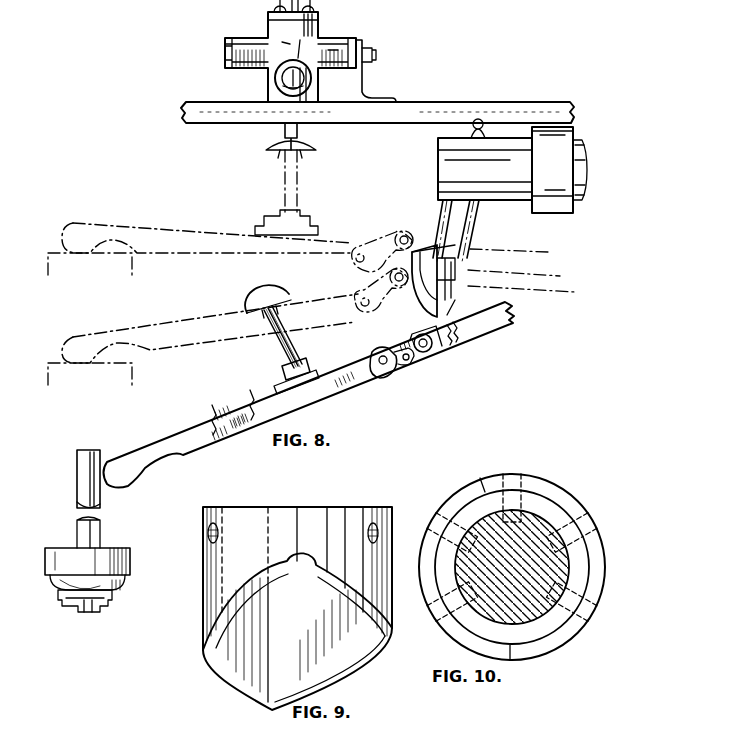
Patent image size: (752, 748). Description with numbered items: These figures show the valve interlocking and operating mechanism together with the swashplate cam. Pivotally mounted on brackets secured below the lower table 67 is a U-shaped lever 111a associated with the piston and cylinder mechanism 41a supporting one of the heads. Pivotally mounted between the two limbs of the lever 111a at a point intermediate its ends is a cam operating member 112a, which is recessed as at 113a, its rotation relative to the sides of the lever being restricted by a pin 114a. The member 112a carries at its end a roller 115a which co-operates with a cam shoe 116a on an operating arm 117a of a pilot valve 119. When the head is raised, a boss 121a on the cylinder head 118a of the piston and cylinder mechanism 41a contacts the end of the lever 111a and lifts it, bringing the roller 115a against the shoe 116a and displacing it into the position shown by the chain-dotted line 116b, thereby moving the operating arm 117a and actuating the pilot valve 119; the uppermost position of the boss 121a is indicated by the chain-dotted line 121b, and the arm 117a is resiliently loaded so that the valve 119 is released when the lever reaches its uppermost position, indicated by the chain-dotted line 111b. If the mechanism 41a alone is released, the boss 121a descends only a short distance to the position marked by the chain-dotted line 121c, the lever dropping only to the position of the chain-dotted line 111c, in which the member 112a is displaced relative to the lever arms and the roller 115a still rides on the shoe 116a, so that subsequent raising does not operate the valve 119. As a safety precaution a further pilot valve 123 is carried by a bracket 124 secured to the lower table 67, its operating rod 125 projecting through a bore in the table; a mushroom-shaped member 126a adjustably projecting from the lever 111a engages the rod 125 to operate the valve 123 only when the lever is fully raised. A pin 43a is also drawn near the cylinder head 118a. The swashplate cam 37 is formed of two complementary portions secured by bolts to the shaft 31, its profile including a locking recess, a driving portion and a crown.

In FIG. 8, the lower table 67 is at (430, 102).
In FIG. 8, the pilot valve 123 is at (322, 38).
In FIG. 8, the bracket 124 is at (364, 88).
In FIG. 8, the operating rod 125 is at (300, 130).
In FIG. 8, the pilot valve 119 is at (505, 159).
In FIG. 8, the operating arm 117a is at (448, 218).
In FIG. 8, the cam shoe 116a is at (425, 293).
In FIG. 8, the chain-dotted line 116b is at (521, 276).
In FIG. 8, the U-shaped lever 111a is at (140, 460).
In FIG. 8, the chain-dotted line 111b is at (226, 226).
In FIG. 8, the chain-dotted line 111c is at (140, 347).
In FIG. 8, the chain-dotted line 121b is at (100, 264).
In FIG. 8, the chain-dotted line 121c is at (100, 376).
In FIG. 8, the boss 121a is at (128, 568).
In FIG. 8, the cylinder head 118a is at (120, 588).
In FIG. 8, the piston and cylinder mechanism 41a is at (76, 606).
In FIG. 8, the pin 43a is at (80, 488).
In FIG. 8, the cam operating member 112a is at (382, 372).
In FIG. 8, the recess 113a is at (400, 364).
In FIG. 8, the pin 114a is at (381, 339).
In FIG. 8, the roller 115a is at (432, 350).
In FIG. 8, the mushroom-shaped member 126a is at (280, 350).
In FIG. 9, the swashplate cam 37 is at (282, 507).
In FIG. 10, the swashplate cam 37 is at (540, 474).
In FIG. 10, the shaft 31 is at (555, 571).